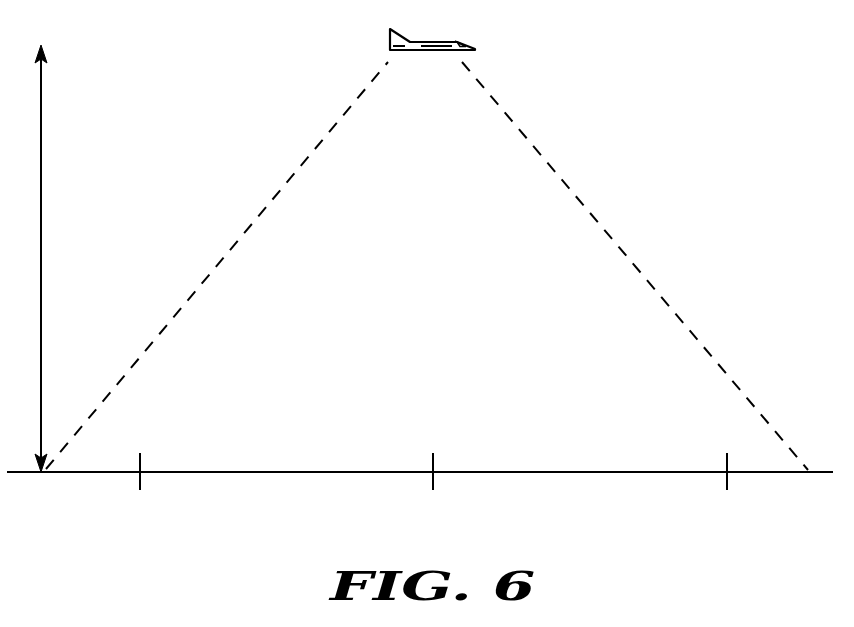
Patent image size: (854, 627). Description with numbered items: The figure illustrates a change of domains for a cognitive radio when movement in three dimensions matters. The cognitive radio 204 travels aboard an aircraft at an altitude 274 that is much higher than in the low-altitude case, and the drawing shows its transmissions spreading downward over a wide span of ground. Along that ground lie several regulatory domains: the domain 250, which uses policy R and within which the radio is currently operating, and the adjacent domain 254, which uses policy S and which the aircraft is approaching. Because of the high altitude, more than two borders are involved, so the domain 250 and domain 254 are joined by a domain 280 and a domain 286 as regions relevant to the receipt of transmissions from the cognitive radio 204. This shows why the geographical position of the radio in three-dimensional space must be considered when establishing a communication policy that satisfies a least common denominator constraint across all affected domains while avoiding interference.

The cognitive radio 204 is at (432, 41).
The altitude 274 is at (41, 124).
The domain 280 is at (92, 508).
The domain 250 is at (400, 508).
The domain 254 is at (502, 508).
The domain 286 is at (786, 508).